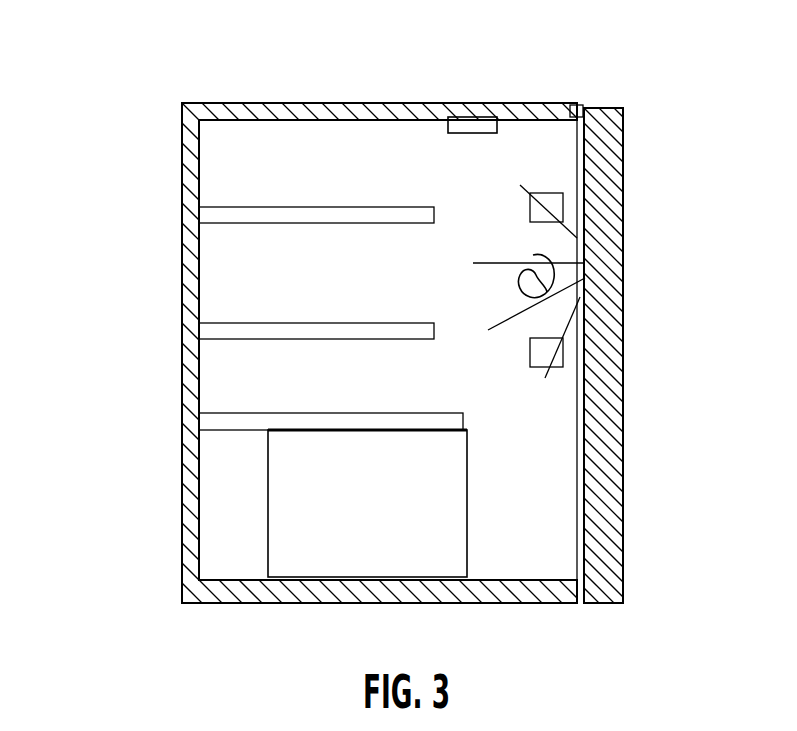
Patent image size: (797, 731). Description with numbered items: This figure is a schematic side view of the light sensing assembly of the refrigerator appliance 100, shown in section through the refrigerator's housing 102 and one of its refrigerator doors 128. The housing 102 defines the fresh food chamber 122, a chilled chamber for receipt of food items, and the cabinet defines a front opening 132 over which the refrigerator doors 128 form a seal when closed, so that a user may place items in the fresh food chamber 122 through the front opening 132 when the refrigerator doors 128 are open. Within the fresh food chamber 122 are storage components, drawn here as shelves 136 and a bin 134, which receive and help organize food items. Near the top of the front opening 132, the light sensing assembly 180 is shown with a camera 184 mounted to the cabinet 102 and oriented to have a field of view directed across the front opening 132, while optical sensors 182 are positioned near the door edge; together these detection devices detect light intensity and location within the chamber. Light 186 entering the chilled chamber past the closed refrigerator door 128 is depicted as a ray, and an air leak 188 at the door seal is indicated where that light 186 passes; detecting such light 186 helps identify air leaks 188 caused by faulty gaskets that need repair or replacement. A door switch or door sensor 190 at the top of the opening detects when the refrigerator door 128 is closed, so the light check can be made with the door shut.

The refrigerator appliance 100 is at (138, 62).
The housing 102 is at (183, 306).
The fresh food chamber 122 is at (358, 289).
The refrigerator doors 128 is at (623, 264).
The front opening 132 is at (586, 491).
The bins 134 is at (390, 515).
The shelves 136 is at (292, 332).
The light sensing assembly 180 is at (479, 104).
The optical sensors 182 is at (530, 355).
The cameras 184 is at (470, 113).
The light 186 is at (505, 263).
The air leaks 188 is at (577, 298).
The door sensor 190 is at (580, 106).